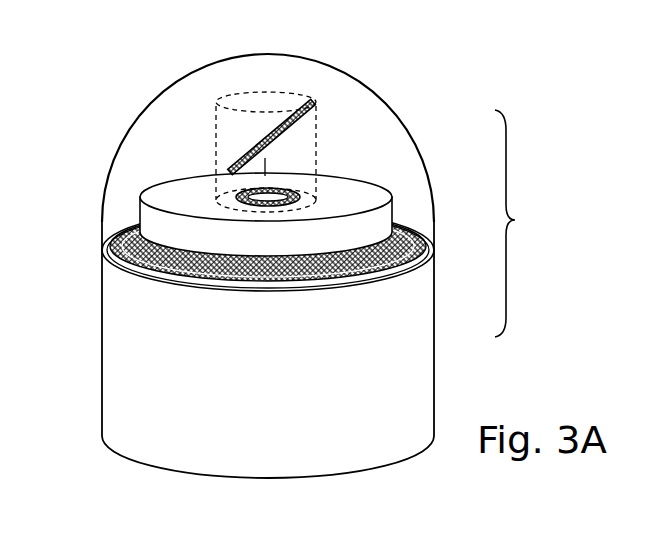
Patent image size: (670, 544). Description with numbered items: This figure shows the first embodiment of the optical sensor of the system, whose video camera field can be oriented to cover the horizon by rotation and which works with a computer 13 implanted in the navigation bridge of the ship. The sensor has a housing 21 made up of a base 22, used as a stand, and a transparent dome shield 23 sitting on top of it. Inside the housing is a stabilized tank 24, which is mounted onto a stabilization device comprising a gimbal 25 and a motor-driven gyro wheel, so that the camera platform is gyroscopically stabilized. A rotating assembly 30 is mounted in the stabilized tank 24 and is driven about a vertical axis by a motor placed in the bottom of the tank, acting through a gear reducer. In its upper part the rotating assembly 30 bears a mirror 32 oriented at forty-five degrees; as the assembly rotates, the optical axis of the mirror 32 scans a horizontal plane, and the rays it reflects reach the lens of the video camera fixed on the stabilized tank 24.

The computer 13 is at (130, 60).
The housing 21 is at (519, 223).
The base 22 is at (420, 328).
The transparent dome shield 23 is at (405, 148).
The stabilized tank 24 is at (145, 216).
The gimbal 25 is at (120, 242).
The rotating assembly 30 is at (313, 173).
The mirror 32 is at (282, 115).